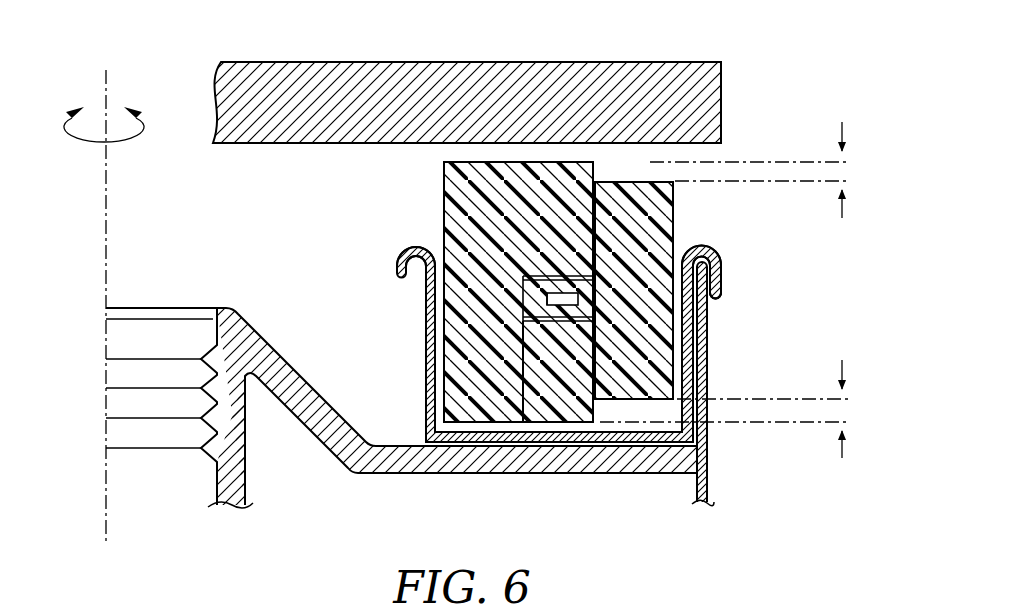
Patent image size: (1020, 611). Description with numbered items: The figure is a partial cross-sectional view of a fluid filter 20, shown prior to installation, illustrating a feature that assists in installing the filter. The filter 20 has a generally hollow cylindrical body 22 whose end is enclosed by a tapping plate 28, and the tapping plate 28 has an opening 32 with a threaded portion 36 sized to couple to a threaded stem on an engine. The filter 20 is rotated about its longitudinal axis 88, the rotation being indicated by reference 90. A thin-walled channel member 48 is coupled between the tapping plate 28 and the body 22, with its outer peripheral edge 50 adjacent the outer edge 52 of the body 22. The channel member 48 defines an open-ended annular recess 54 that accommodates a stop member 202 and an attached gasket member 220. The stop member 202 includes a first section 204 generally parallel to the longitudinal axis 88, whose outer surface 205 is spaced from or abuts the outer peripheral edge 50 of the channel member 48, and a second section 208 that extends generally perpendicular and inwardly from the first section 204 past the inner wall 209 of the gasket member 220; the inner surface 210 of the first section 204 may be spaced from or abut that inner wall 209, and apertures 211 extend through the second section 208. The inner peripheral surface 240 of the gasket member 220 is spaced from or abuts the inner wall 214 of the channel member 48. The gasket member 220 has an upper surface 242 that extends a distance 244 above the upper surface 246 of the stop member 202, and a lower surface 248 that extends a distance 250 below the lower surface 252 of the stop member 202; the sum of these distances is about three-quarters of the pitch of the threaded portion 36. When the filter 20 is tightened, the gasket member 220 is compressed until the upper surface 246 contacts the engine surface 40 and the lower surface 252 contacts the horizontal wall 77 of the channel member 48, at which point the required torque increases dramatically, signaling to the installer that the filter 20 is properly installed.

The fluid filter 20 is at (434, 375).
The body 22 is at (708, 480).
The tapping plate 28 is at (487, 473).
The opening 32 is at (170, 272).
The threaded portion 36 is at (207, 402).
The surface 40 is at (289, 143).
The channel member 48 is at (427, 405).
The outer peripheral edge 50 is at (702, 312).
The outer edge 52 is at (707, 343).
The annular recess 54 is at (431, 241).
The horizontal wall 77 is at (590, 430).
The longitudinal axis 88 is at (107, 80).
The rotation about the longitudinal axis 90 is at (80, 142).
The stop member 202 is at (673, 190).
The first section 204 is at (699, 199).
The outer surface 205 is at (738, 290).
The second section 208 is at (535, 308).
The inner wall 209 is at (597, 175).
The inner surface 210 is at (583, 337).
The apertures 211 is at (560, 293).
The inner wall 214 is at (538, 382).
The gasket member 220 is at (500, 262).
The inner peripheral surface 240 is at (410, 257).
The upper surface 242 is at (505, 162).
The distance 244 is at (840, 125).
The upper surface 246 is at (637, 181).
The lower surface 248 is at (462, 422).
The distance 250 is at (842, 362).
The lower surface 252 is at (662, 400).